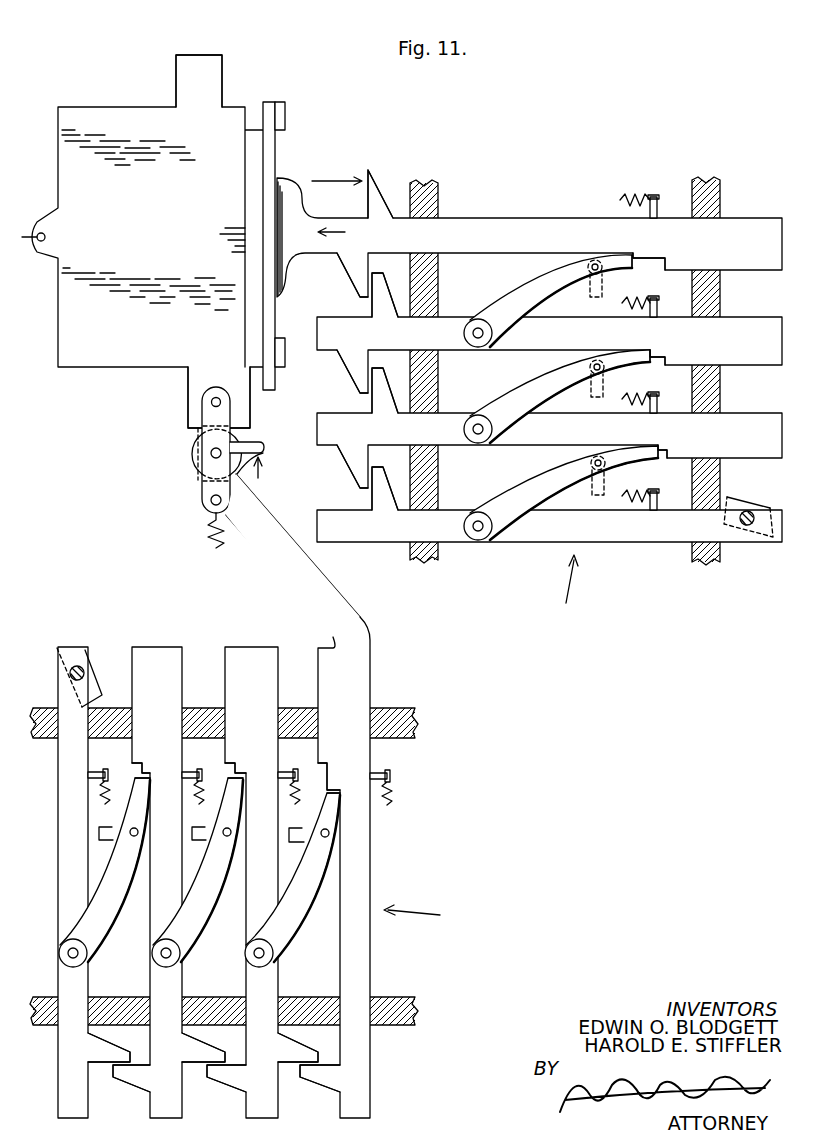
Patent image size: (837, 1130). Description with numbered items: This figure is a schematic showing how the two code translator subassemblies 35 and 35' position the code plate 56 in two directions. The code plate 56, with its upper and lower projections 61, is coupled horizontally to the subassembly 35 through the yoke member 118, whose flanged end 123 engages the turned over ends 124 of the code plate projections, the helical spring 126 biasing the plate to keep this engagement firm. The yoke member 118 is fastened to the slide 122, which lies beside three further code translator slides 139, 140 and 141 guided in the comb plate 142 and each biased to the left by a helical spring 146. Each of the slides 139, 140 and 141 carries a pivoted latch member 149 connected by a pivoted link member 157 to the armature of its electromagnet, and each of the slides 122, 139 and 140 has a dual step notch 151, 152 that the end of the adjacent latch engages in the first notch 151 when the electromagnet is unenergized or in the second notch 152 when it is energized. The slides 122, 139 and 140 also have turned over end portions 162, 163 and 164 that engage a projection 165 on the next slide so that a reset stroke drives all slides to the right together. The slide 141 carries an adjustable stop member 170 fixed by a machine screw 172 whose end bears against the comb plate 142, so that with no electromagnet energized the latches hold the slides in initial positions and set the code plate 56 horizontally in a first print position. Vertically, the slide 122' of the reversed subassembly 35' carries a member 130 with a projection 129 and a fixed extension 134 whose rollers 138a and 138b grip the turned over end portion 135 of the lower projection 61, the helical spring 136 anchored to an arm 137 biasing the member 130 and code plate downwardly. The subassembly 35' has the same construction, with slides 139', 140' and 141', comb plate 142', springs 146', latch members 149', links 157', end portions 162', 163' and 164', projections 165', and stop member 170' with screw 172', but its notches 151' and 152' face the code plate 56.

The code translator subassembly 35 is at (564, 591).
The code plate 56 is at (74, 360).
The projection 61 is at (213, 70).
The yoke member 118 is at (317, 216).
The slide 122 is at (529, 233).
The flanged end 123 is at (276, 156).
The turned over end 124 is at (286, 116).
The helical spring 126 is at (18, 228).
The projection 129 is at (263, 444).
The member 130 is at (268, 555).
The fixed extension 134 is at (208, 491).
The turned over end portion 135 is at (205, 424).
The helical spring 136 is at (209, 530).
The arm 137 is at (588, 288).
The roller 138a is at (192, 455).
The roller 138b is at (205, 410).
The code translator slide 139 is at (549, 333).
The code translator slide 140 is at (549, 428).
The code translator slide 141 is at (549, 504).
The comb plate 142 is at (584, 371).
The helical spring 146 is at (646, 336).
The latch member 149 is at (561, 397).
The notch 151 is at (671, 341).
The notch 152 is at (689, 345).
The pivoted link member 157 is at (578, 432).
The turned over end portion 162 is at (335, 275).
The turned over end portion 163 is at (335, 371).
The turned over end portion 164 is at (335, 466).
The projection 165 is at (391, 340).
The adjustable stop member 170 is at (760, 509).
The machine screw 172 is at (750, 546).
The code translator subassembly 35' is at (428, 915).
The slide 122' is at (326, 796).
The code translator slide 139' is at (267, 882).
The code translator slide 140' is at (173, 882).
The code translator slide 141' is at (98, 882).
The comb plate 142' is at (224, 841).
The helical spring 146' is at (240, 787).
The latch member 149' is at (199, 872).
The notch 151' is at (257, 807).
The notch 152' is at (252, 764).
The pivoted link member 157' is at (172, 834).
The turned over end portion 162' is at (314, 1093).
The turned over end portion 163' is at (220, 1093).
The turned over end portion 164' is at (126, 1093).
The projection 165' is at (212, 1044).
The adjustable stop member 170' is at (96, 677).
The machine screw 172' is at (100, 652).